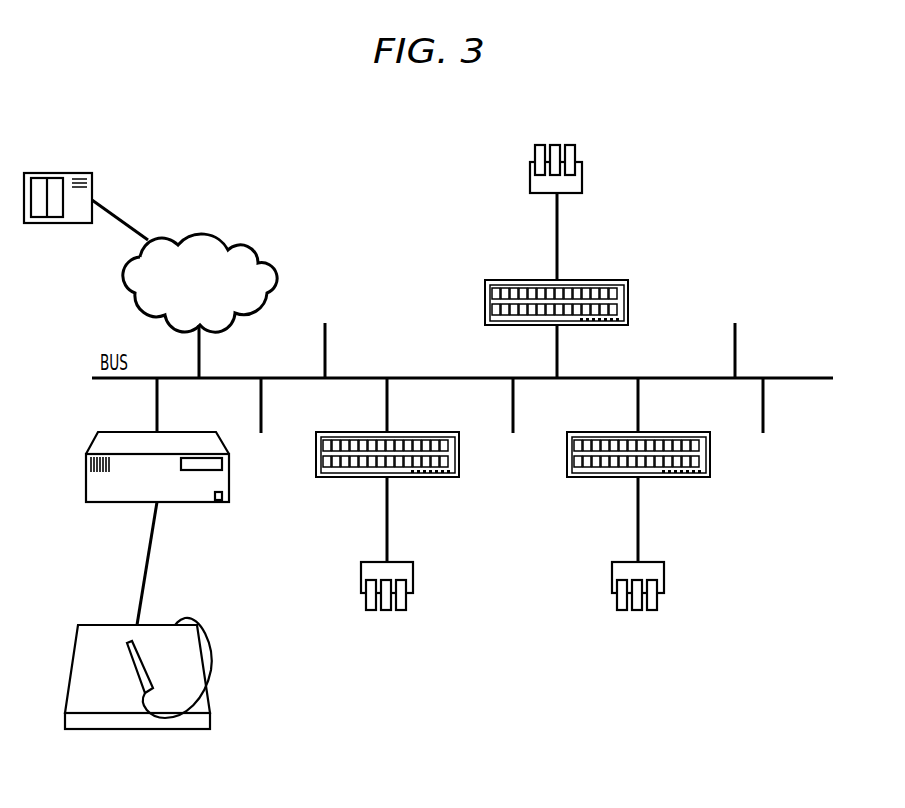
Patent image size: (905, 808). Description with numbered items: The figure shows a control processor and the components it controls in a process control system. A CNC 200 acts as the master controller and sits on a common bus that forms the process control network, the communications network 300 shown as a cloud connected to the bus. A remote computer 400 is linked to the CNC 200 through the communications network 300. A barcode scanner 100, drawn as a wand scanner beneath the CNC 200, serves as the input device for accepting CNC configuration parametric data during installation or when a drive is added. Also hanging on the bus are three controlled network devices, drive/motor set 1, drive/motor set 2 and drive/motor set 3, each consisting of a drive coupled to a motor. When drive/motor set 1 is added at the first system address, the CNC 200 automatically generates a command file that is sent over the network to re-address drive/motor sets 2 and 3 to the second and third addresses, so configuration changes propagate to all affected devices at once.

The barcode scanner 100 is at (90, 625).
The CNC 200 is at (92, 445).
The communications network 300 is at (257, 247).
The remote computer 400 is at (75, 173).
The drive/motor set 1 is at (390, 530).
The drive/motor set 2 is at (560, 232).
The drive/motor set 3 is at (640, 530).